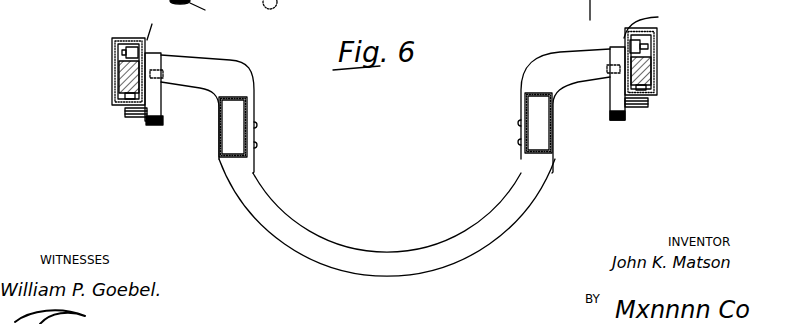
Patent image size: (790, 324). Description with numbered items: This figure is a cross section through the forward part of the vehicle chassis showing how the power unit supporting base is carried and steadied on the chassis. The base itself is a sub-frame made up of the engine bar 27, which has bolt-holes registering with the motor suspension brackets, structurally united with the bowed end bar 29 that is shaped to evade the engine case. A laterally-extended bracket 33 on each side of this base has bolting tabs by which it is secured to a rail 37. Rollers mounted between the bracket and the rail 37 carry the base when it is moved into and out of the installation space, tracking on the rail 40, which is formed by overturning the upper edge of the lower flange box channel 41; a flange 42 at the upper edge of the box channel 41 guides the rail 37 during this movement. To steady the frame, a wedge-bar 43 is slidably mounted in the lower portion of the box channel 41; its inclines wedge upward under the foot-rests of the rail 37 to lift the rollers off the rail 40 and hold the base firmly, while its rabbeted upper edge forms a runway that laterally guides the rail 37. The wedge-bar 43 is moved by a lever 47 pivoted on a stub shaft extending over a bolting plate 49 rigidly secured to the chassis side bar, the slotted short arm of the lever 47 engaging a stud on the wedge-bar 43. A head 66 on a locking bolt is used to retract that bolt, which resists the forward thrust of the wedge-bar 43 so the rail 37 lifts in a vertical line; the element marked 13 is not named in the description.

The arm 13 is at (605, 30).
The engine bar 27 is at (250, 106).
The end bar 29 is at (420, 262).
The laterally-extended bracket 33 is at (208, 72).
The rail 37 is at (134, 58).
The rail 40 is at (157, 86).
The box channel 41 is at (124, 57).
The flange 42 is at (409, 22).
The wedge-bar 43 is at (115, 88).
The lever 47 is at (160, 126).
The bolting plate 49 is at (135, 112).
The head 66 is at (389, 13).